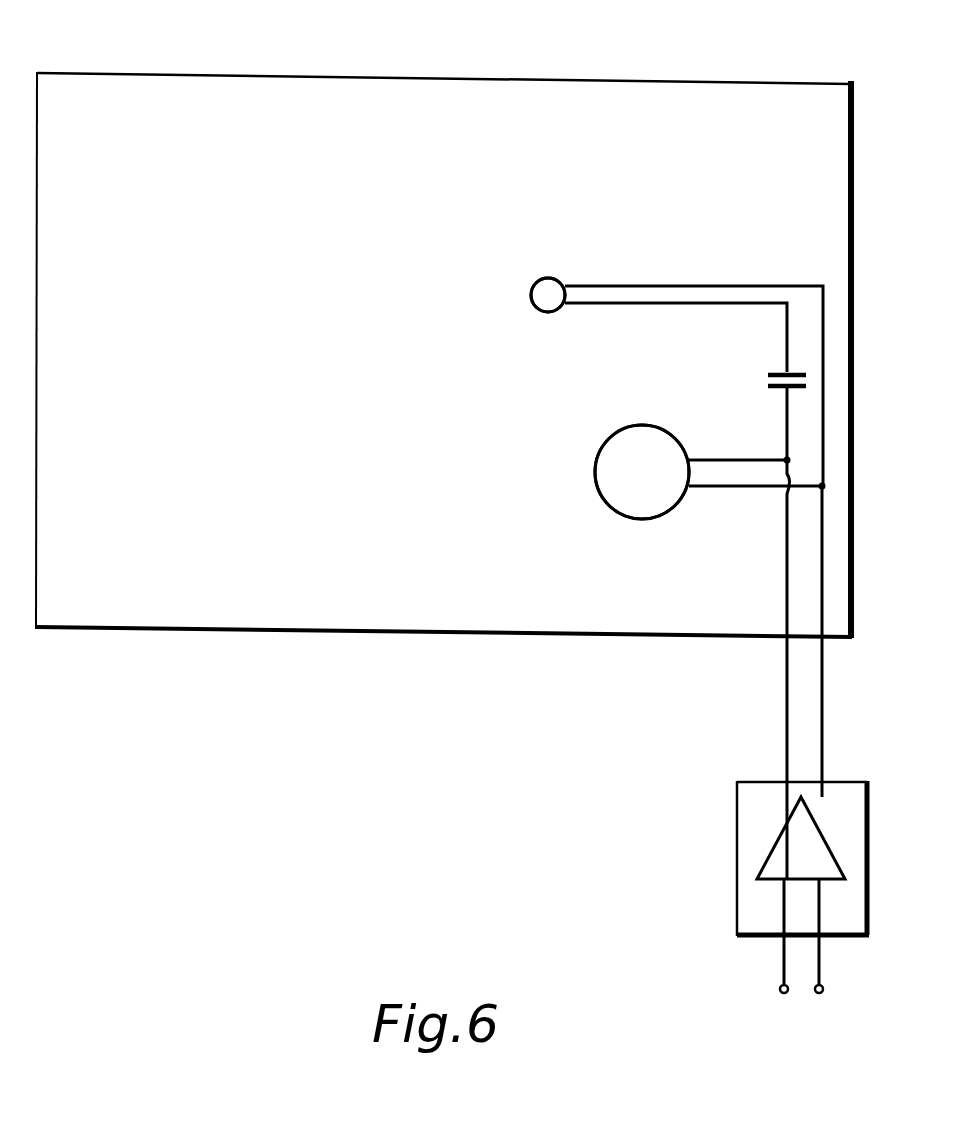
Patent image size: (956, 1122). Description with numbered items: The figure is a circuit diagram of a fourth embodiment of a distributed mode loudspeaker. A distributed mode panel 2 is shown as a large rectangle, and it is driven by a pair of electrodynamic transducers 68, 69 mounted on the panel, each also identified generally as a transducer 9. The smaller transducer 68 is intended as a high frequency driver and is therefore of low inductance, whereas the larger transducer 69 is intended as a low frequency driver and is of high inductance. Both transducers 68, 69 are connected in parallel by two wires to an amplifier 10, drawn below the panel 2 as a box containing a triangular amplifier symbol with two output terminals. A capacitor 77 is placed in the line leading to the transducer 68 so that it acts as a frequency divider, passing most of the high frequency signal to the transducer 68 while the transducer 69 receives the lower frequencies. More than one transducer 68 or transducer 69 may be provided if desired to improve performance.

The distributed mode panel 2 is at (137, 95).
The transducer 9 is at (508, 295).
The amplifier 10 is at (750, 812).
The transducer 68 is at (546, 288).
The transducer 69 is at (631, 502).
The capacitor 77 is at (785, 373).